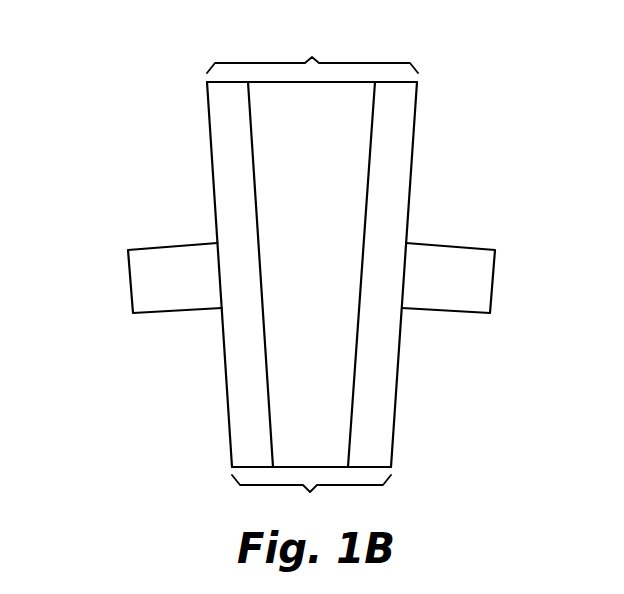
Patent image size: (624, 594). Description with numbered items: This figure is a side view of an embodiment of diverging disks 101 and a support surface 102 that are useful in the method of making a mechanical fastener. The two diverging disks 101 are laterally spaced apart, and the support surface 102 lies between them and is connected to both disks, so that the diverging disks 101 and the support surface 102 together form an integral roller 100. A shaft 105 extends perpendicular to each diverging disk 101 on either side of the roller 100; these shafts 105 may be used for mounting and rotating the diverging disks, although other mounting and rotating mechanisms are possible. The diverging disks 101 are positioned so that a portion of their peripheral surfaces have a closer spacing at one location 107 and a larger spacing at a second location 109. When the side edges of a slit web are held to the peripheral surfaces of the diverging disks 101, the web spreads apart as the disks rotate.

The roller 100 is at (436, 59).
The diverging disks 101 is at (222, 160).
The support surface 102 is at (357, 120).
The shaft 105 is at (138, 280).
The location of closer spacing 107 is at (311, 497).
The location of larger spacing 109 is at (312, 53).